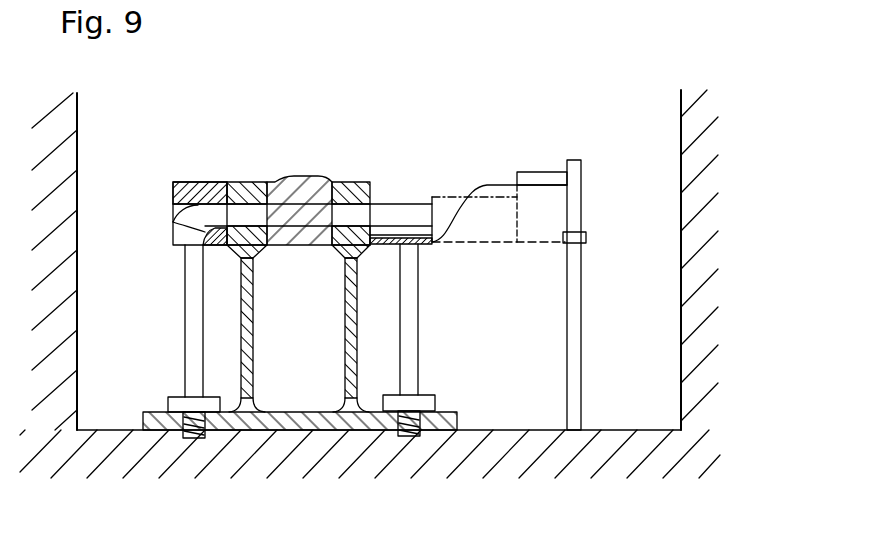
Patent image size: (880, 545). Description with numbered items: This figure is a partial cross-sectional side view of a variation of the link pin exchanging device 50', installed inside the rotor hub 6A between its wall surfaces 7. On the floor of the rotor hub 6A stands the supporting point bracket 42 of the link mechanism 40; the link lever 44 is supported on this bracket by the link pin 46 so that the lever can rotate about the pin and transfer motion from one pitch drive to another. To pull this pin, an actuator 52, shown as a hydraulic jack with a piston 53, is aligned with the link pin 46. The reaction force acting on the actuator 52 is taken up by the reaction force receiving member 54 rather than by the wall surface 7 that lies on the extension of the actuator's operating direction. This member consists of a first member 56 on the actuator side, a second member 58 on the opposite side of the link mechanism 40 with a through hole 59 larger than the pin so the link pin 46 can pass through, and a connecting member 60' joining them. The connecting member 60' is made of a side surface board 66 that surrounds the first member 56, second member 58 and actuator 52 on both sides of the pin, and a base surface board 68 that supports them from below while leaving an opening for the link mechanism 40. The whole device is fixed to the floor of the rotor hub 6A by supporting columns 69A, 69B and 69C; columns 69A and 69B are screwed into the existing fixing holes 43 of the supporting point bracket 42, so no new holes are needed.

The wall surface 7 is at (77, 118).
The reaction force receiving member 54 is at (156, 140).
The second member 58 is at (200, 182).
The through hole 59 is at (173, 222).
The base surface board 68 is at (224, 248).
The link lever 44 is at (293, 248).
The link pin 46 is at (286, 212).
The link mechanism 40 is at (334, 145).
The piston 53 is at (393, 208).
The actuator 52 is at (448, 190).
The side surface board 66 is at (503, 185).
The first member 56 is at (545, 172).
The link pin exchanging device 50' is at (621, 110).
The connecting member 60' is at (498, 256).
The supporting point bracket 42 is at (345, 338).
The supporting column 69A is at (185, 346).
The supporting column 69B is at (418, 346).
The supporting column 69C is at (582, 337).
The fixing hole 43 is at (191, 440).
The rotor hub 6A is at (618, 428).